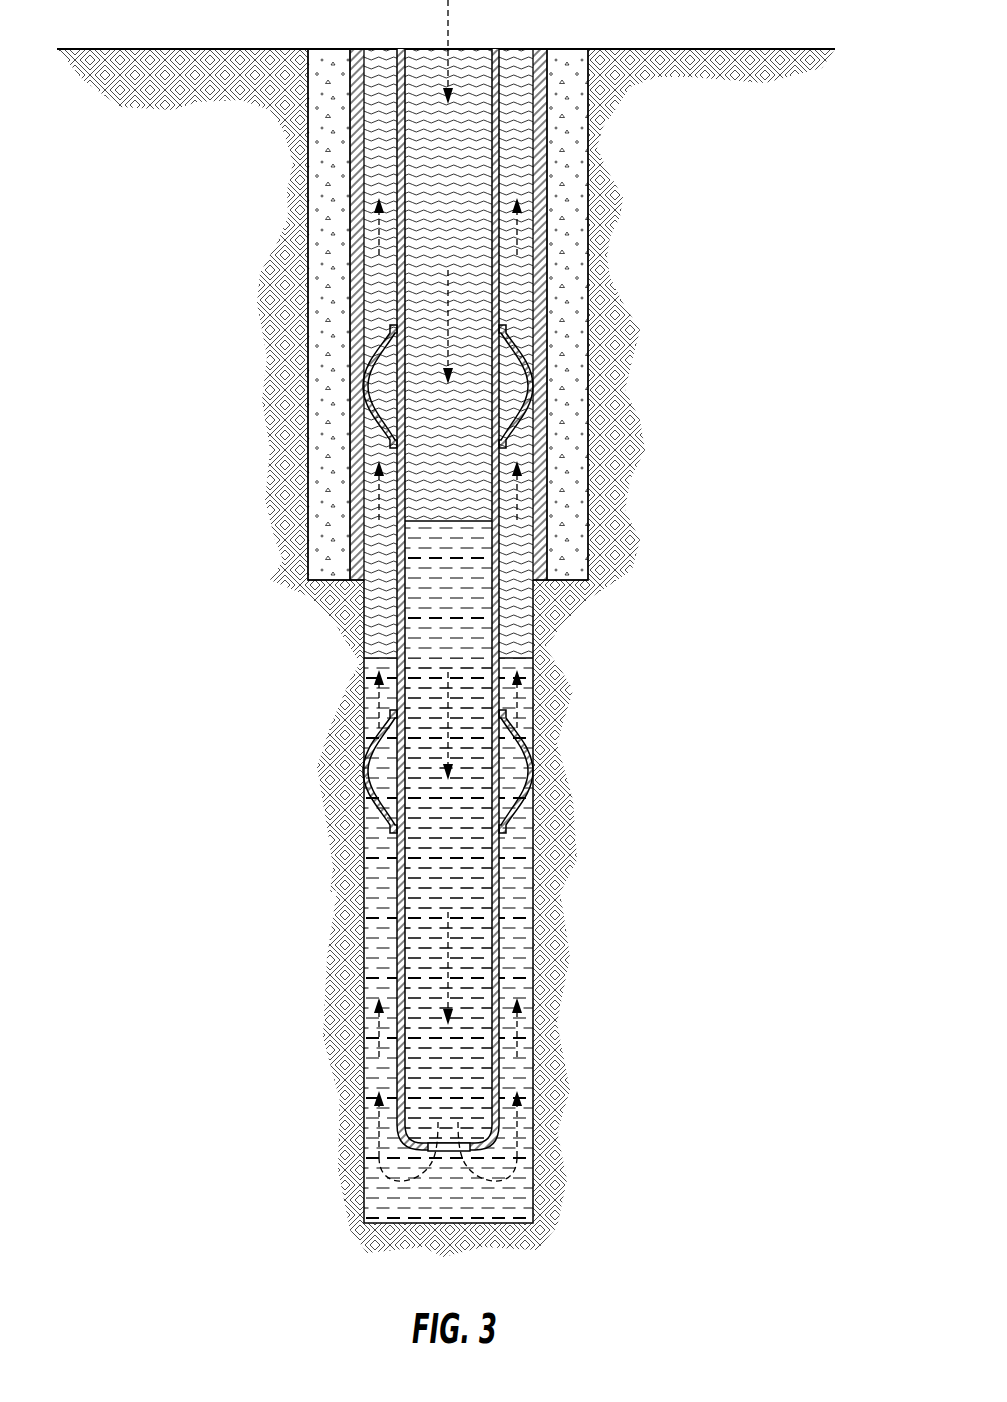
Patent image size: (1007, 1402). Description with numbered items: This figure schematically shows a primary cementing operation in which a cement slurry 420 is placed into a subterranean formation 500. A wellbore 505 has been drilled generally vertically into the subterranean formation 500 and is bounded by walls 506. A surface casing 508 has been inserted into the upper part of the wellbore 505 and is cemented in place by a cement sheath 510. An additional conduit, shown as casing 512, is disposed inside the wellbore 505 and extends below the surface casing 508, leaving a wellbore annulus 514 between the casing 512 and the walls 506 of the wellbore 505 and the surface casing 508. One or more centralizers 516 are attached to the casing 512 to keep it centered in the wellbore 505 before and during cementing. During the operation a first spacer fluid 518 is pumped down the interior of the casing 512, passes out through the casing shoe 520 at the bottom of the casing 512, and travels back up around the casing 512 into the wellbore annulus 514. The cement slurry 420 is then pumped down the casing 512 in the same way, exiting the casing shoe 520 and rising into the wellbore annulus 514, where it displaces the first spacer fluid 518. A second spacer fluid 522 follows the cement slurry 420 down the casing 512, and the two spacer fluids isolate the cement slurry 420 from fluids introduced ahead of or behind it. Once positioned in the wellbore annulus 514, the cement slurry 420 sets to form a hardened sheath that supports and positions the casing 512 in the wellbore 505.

The subterranean formation 500 is at (332, 876).
The wellbore 505 is at (298, 178).
The walls 506 is at (537, 638).
The surface casing 508 is at (547, 190).
The cement sheath 510 is at (562, 278).
The casing 512 is at (503, 775).
The wellbore annulus 514 is at (373, 940).
The centralizers 516 is at (375, 355).
The first spacer fluid 518 is at (378, 580).
The casing shoe 520 is at (480, 1149).
The second spacer fluid 522 is at (428, 60).
The cement slurry 420 is at (480, 930).